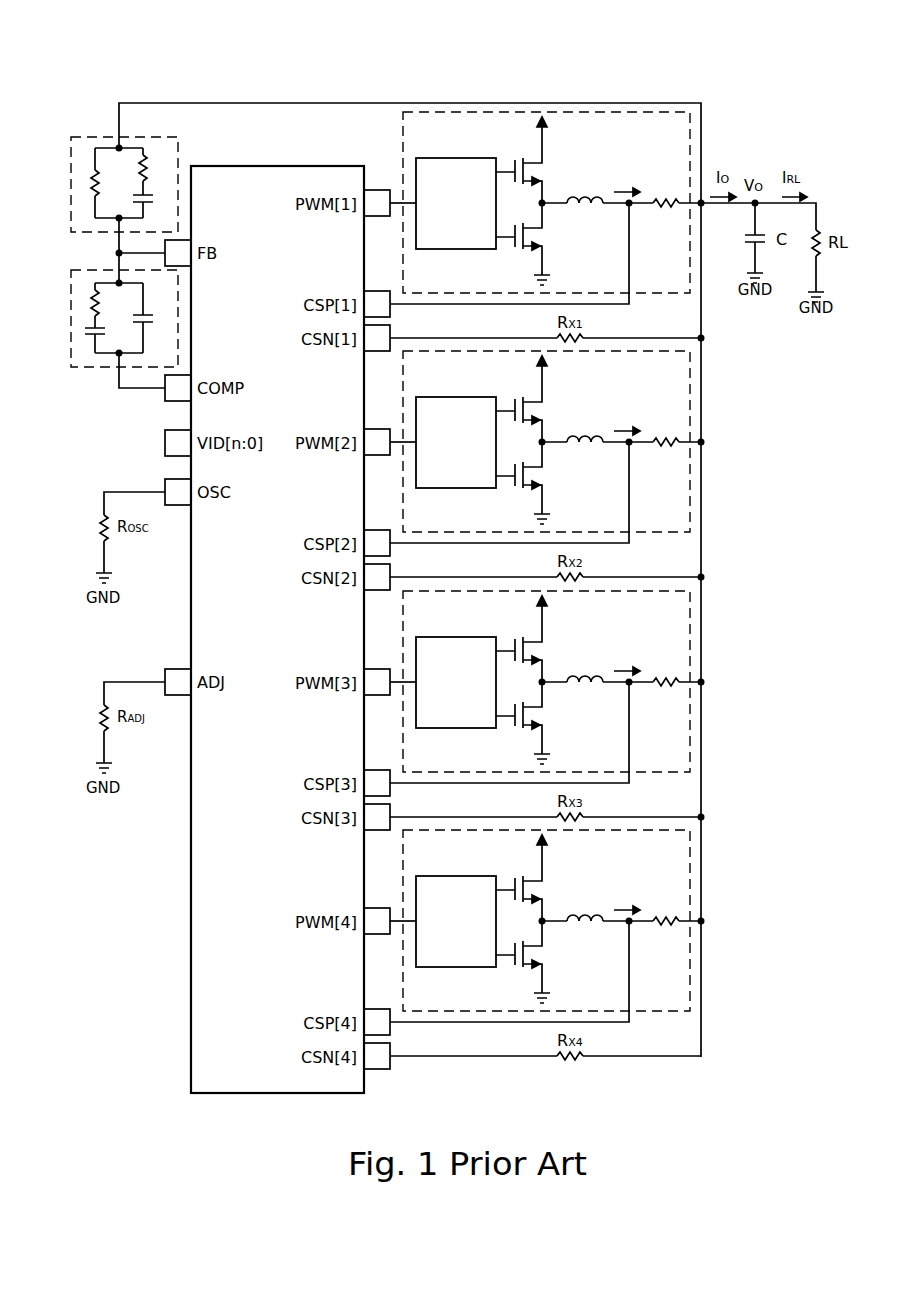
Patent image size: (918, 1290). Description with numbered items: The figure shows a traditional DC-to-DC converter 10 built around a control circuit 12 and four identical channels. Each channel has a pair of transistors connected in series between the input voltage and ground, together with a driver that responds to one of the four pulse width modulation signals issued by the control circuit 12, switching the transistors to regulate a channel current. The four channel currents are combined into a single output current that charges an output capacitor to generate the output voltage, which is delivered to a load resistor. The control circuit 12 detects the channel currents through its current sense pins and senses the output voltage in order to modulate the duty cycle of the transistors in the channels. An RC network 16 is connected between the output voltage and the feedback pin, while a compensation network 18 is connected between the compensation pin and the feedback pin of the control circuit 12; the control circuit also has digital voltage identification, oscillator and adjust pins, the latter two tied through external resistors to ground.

The DC-to-DC converter 10 is at (769, 63).
The control circuit 12 is at (278, 165).
The RC network 16 is at (93, 137).
The compensation network 18 is at (93, 367).